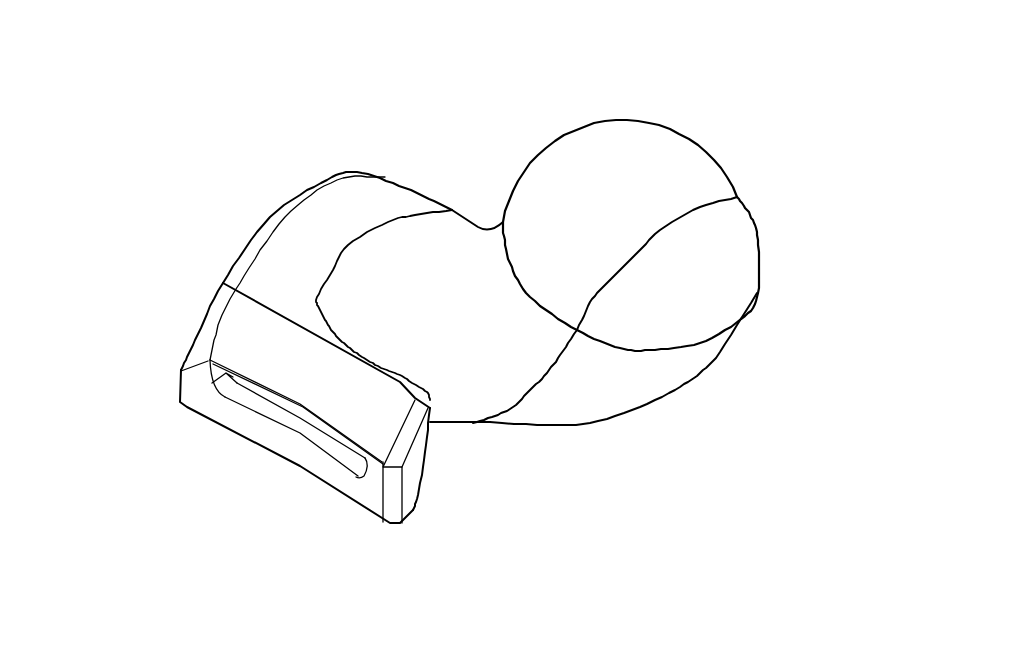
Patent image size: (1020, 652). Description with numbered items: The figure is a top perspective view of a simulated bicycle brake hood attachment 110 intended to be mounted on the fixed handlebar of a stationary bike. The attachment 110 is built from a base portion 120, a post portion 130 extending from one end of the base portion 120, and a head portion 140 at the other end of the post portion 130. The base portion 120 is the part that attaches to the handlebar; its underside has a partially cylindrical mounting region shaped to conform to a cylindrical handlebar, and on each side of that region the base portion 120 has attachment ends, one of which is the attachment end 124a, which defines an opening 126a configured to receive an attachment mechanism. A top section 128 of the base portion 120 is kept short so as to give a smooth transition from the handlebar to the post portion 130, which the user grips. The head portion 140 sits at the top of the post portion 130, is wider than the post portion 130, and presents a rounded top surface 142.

The simulated bicycle brake hood attachment 110 is at (183, 132).
The base portion 120 is at (196, 305).
The attachment end 124a is at (300, 460).
The opening 126a is at (238, 392).
The top section 128 is at (326, 184).
The post portion 130 is at (480, 210).
The head portion 140 is at (565, 108).
The rounded top surface 142 is at (645, 120).